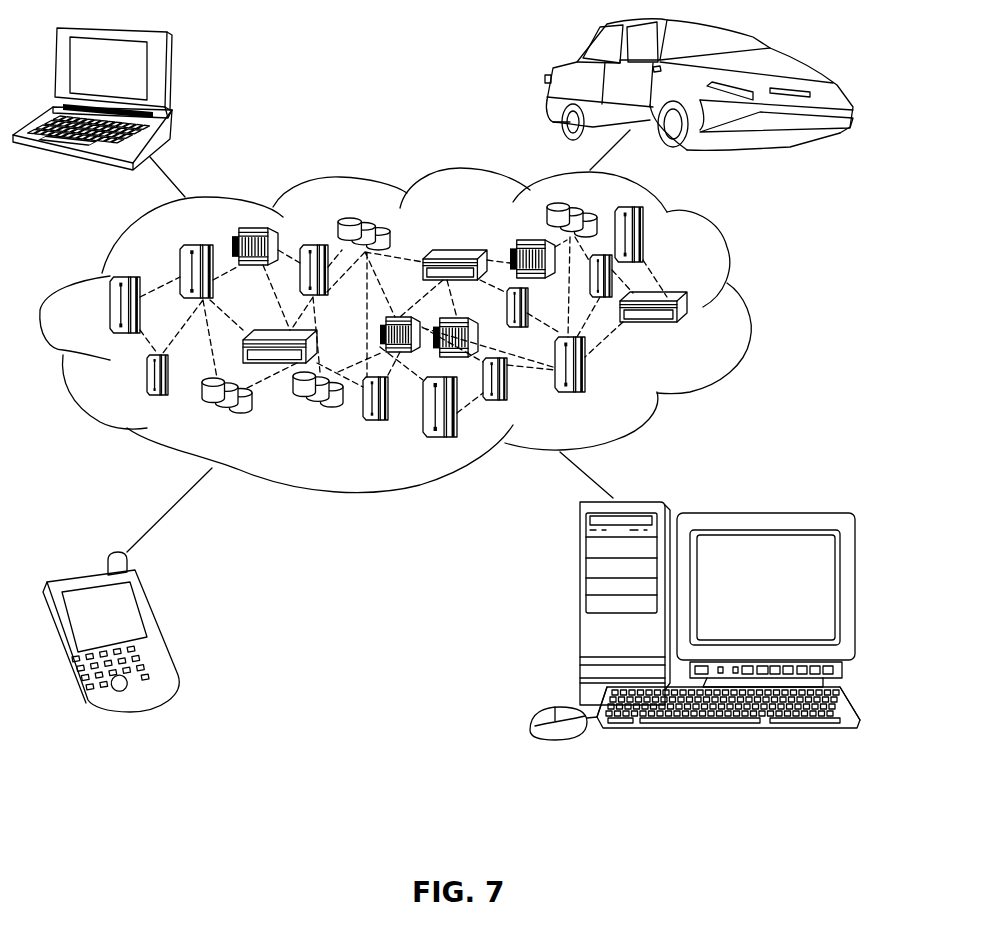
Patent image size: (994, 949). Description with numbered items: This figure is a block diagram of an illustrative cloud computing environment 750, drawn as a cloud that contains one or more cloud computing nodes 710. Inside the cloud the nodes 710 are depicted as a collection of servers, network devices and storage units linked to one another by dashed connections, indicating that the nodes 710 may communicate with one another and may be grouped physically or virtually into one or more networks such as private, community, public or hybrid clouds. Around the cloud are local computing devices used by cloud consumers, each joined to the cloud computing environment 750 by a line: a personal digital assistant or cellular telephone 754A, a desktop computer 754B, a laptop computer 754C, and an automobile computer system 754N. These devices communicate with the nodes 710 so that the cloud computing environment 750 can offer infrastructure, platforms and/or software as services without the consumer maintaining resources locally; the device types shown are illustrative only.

The cloud computing nodes 710 is at (719, 331).
The cloud computing environment 750 is at (733, 268).
The personal digital assistant or cellular telephone 754A is at (158, 632).
The desktop computer 754B is at (578, 607).
The laptop computer 754C is at (167, 72).
The automobile computer system 754N is at (553, 77).